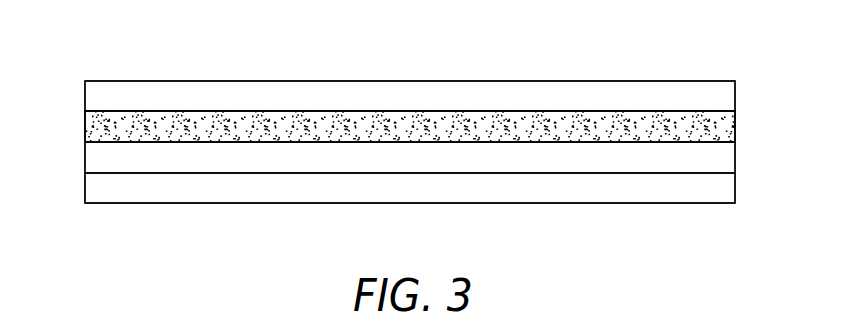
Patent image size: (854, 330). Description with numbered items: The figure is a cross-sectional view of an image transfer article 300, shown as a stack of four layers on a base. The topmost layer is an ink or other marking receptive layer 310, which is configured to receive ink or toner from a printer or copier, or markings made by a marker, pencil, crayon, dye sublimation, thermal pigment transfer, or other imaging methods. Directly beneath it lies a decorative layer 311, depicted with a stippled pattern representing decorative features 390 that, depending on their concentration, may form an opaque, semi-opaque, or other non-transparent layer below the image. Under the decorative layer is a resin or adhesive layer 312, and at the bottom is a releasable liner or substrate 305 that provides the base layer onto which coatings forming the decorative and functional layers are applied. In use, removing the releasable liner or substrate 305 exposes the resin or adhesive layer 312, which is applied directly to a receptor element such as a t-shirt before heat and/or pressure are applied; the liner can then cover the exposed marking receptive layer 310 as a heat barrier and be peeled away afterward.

The image transfer article 300 is at (137, 70).
The marking receptive layer 310 is at (736, 95).
The decorative layer 311 is at (736, 128).
The decorative features 390 is at (98, 127).
The resin or adhesive layer 312 is at (736, 158).
The releasable liner or substrate 305 is at (736, 187).